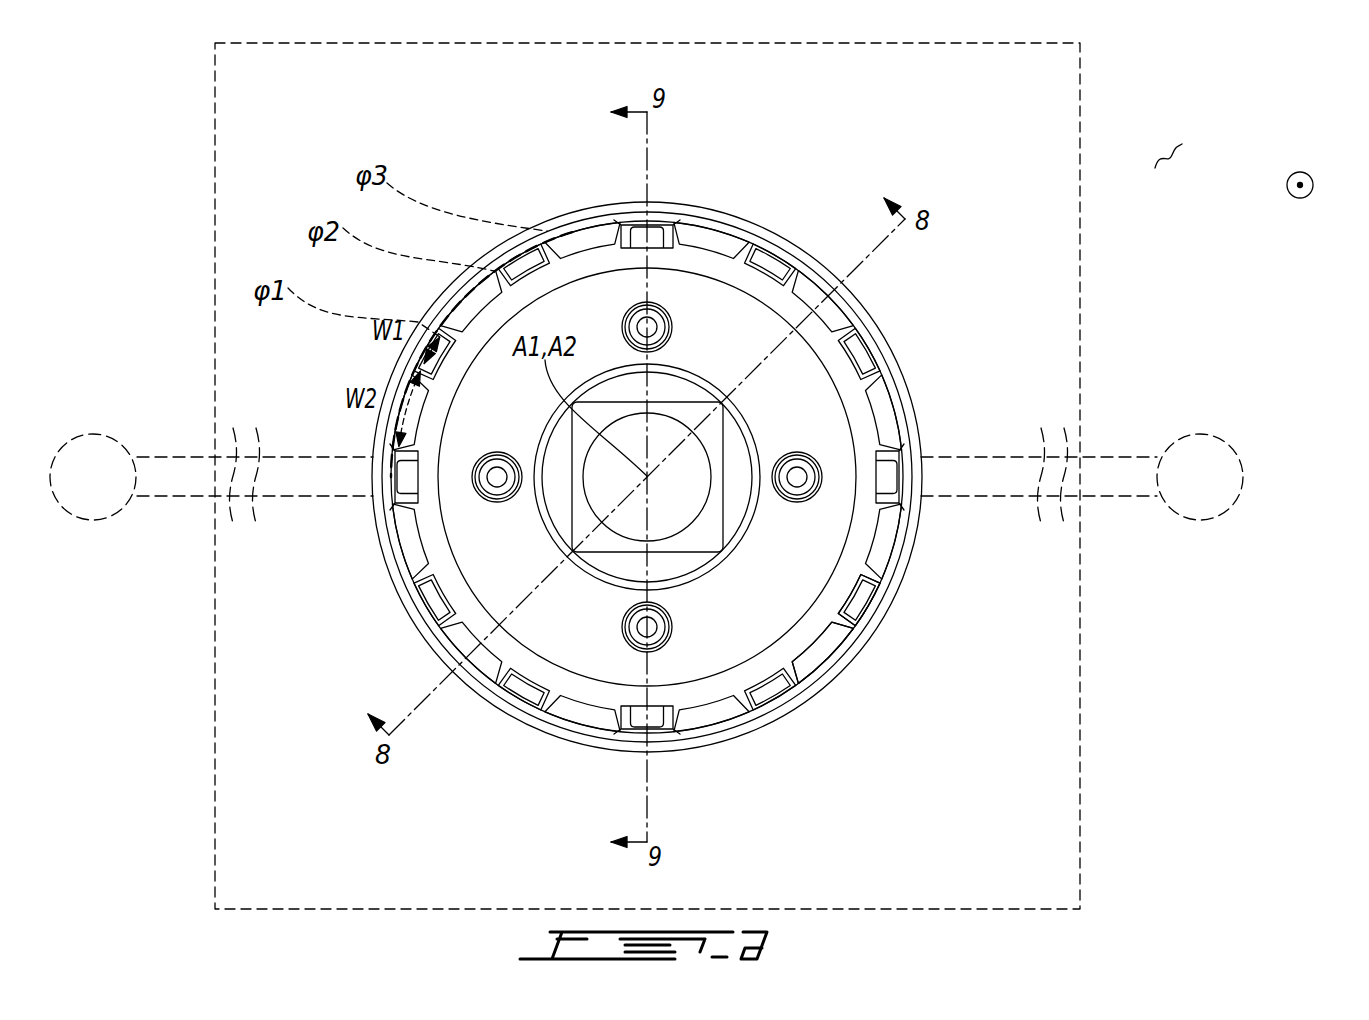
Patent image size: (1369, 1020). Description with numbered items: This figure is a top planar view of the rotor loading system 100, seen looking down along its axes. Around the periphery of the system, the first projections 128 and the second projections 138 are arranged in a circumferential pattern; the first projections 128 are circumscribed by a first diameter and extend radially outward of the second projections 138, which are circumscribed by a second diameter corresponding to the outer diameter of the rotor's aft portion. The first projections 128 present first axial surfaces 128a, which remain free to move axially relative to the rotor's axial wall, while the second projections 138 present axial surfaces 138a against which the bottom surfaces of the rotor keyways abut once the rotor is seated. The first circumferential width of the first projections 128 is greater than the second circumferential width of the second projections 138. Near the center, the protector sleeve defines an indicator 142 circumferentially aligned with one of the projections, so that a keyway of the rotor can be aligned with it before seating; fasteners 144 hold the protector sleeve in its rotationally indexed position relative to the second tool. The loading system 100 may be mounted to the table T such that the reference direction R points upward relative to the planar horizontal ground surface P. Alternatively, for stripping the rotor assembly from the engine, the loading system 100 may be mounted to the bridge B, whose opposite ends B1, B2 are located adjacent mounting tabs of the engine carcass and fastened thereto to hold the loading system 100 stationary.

The loading system 100 is at (318, 154).
The first projections 128 is at (950, 549).
The first axial surfaces 128a is at (815, 655).
The second projections 138 is at (940, 632).
The axial surfaces 138a is at (768, 688).
The indicator 142 is at (899, 478).
The fasteners 144 is at (817, 462).
The table T is at (1080, 80).
The planar horizontal ground surface P is at (1184, 131).
The reference direction R is at (1310, 175).
The bridge B is at (215, 497).
The opposite end of bridge B1 is at (93, 434).
The opposite end of bridge B2 is at (1203, 434).